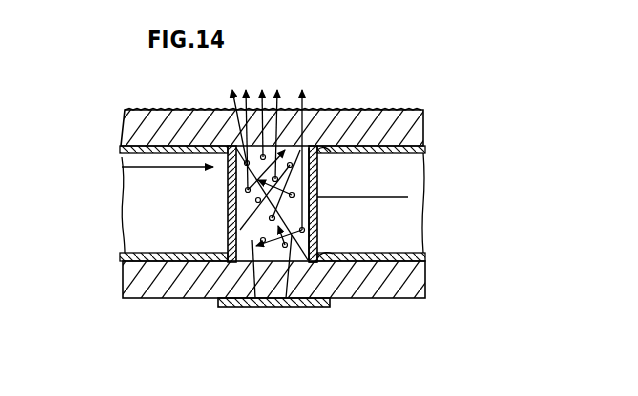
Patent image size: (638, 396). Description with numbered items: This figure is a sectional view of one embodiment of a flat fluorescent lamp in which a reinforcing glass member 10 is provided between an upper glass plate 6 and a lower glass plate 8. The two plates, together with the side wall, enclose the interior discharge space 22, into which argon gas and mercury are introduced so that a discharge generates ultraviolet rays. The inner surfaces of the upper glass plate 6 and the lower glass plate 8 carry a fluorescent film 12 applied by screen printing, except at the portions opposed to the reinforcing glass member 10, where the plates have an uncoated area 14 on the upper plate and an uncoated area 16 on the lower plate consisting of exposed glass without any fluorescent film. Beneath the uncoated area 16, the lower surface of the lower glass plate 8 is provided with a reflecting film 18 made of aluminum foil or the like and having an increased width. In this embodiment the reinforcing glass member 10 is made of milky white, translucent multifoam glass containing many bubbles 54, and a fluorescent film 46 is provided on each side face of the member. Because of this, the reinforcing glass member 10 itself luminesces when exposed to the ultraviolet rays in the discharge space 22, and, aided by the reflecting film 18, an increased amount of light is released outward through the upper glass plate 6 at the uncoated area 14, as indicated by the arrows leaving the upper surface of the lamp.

The upper glass plate 6 is at (410, 122).
The lower glass plate 8 is at (410, 287).
The reinforcing glass member 10 is at (332, 254).
The fluorescent film 12 is at (122, 150).
The uncoated area of upper glass plate 14 is at (336, 145).
The uncoated area of lower glass plate 16 is at (325, 306).
The reflecting film 18 is at (228, 308).
The discharge space 22 is at (400, 220).
The fluorescent film on reinforcing member 46 is at (212, 200).
The bubbles 54 is at (317, 170).